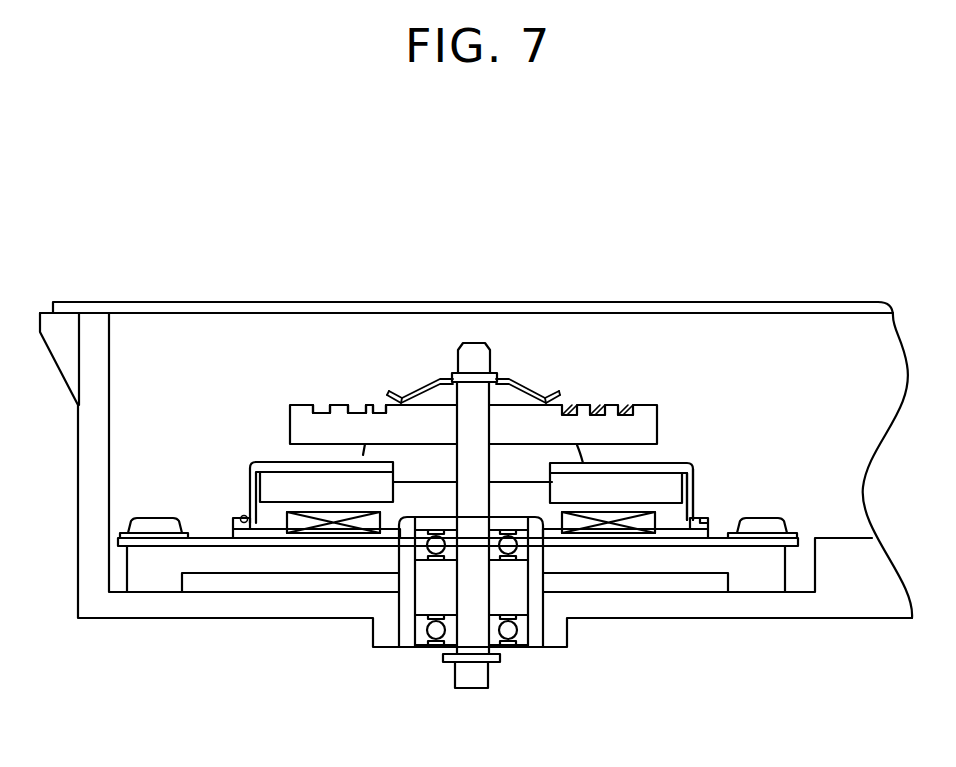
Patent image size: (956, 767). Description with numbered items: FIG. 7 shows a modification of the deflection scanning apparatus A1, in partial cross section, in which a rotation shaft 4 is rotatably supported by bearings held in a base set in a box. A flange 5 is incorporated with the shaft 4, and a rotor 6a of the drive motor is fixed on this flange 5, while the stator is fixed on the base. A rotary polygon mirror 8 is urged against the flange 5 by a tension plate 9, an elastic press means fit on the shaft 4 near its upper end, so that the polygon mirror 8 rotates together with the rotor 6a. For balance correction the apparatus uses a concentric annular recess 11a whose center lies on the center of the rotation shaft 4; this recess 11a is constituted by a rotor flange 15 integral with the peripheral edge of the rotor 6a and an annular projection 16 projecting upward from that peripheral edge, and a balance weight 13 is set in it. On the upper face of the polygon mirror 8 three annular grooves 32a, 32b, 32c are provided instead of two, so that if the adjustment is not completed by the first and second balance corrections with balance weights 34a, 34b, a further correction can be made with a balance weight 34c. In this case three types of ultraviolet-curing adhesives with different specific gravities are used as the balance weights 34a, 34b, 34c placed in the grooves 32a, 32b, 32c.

The deflection scanning apparatus A1 is at (98, 290).
The rotation shaft 4 is at (478, 343).
The flange 5 is at (365, 455).
The rotor 6a is at (560, 495).
The rotary polygon mirror 8 is at (459, 350).
The tension plate 9 is at (441, 377).
The concentric annular recess 11a is at (698, 519).
The balance weight 13 is at (240, 517).
The rotor flange 15 is at (692, 531).
The annular projection 16 is at (708, 530).
The annular groove 32a is at (320, 404).
The annular groove 32b is at (348, 404).
The annular groove 32c is at (380, 404).
The balance weight 34a is at (626, 404).
The balance weight 34b is at (597, 404).
The balance weight 34c is at (567, 404).